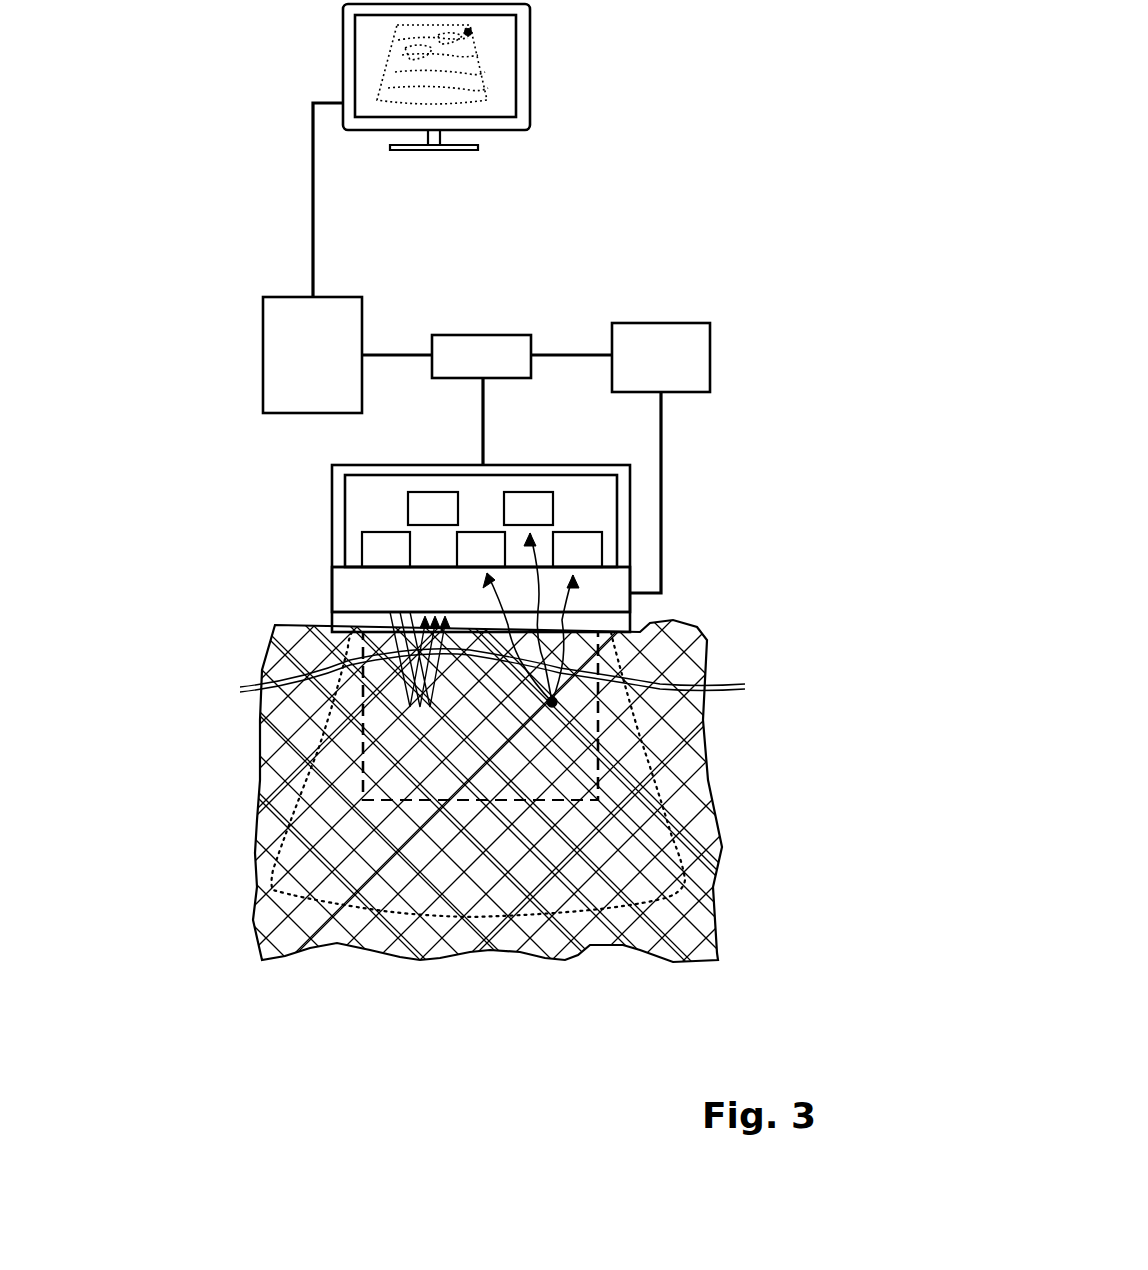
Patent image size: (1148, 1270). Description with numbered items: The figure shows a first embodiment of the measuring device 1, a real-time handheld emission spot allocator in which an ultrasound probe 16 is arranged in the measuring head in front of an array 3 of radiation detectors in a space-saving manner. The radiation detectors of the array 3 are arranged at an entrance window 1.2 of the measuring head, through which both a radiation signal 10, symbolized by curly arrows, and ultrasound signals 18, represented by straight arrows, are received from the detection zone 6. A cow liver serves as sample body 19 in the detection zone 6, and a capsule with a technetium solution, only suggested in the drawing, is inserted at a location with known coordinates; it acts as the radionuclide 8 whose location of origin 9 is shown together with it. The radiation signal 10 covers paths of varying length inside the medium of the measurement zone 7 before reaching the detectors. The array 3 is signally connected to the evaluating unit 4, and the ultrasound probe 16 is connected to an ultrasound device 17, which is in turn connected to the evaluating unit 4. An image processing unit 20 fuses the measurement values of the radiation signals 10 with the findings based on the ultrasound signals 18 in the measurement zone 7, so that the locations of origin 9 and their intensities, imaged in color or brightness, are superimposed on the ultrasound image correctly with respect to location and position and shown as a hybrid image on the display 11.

The measuring device 1 is at (748, 252).
The array 3 is at (345, 512).
The evaluating unit 4 is at (483, 345).
The detection zone 6 is at (683, 860).
The measurement zone 7 is at (600, 775).
The radionuclide 8 is at (600, 700).
The location of origin 9 is at (480, 716).
The radiation signal 10 is at (560, 670).
The display 11 is at (523, 88).
The entrance window 1.2 is at (345, 622).
The ultrasound probe 16 is at (345, 580).
The ultrasound device 17 is at (661, 343).
The ultrasound signals 18 is at (387, 647).
The sample body 19 is at (647, 933).
The image processing unit 20 is at (283, 315).